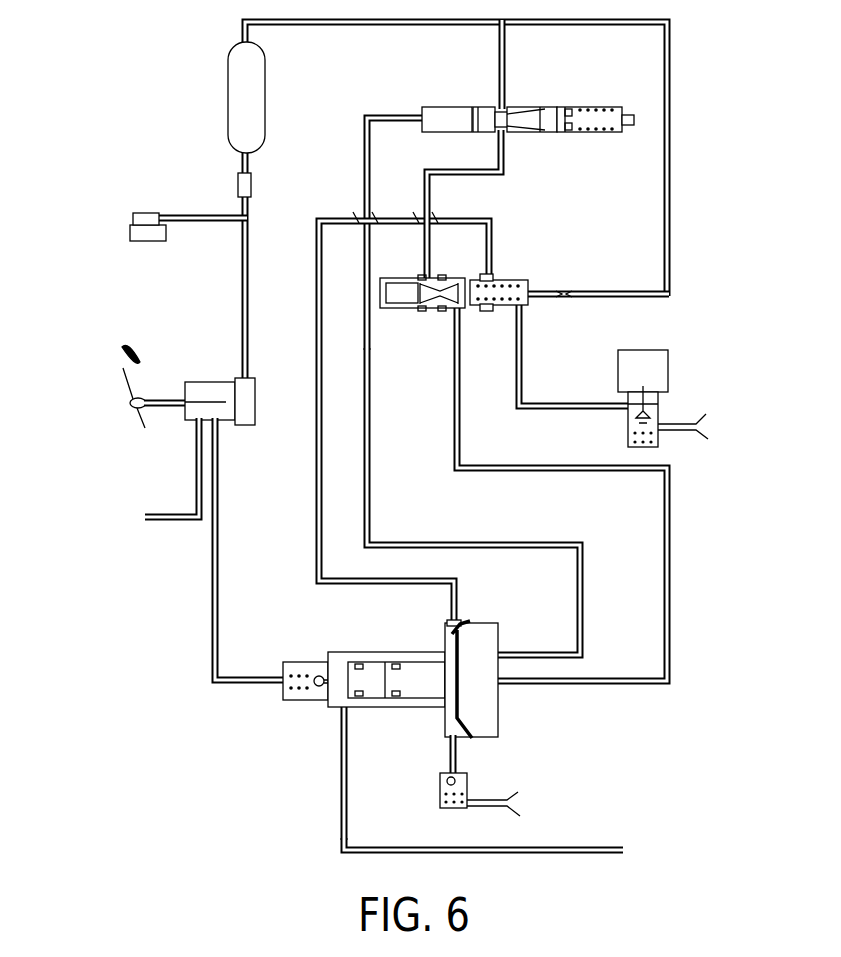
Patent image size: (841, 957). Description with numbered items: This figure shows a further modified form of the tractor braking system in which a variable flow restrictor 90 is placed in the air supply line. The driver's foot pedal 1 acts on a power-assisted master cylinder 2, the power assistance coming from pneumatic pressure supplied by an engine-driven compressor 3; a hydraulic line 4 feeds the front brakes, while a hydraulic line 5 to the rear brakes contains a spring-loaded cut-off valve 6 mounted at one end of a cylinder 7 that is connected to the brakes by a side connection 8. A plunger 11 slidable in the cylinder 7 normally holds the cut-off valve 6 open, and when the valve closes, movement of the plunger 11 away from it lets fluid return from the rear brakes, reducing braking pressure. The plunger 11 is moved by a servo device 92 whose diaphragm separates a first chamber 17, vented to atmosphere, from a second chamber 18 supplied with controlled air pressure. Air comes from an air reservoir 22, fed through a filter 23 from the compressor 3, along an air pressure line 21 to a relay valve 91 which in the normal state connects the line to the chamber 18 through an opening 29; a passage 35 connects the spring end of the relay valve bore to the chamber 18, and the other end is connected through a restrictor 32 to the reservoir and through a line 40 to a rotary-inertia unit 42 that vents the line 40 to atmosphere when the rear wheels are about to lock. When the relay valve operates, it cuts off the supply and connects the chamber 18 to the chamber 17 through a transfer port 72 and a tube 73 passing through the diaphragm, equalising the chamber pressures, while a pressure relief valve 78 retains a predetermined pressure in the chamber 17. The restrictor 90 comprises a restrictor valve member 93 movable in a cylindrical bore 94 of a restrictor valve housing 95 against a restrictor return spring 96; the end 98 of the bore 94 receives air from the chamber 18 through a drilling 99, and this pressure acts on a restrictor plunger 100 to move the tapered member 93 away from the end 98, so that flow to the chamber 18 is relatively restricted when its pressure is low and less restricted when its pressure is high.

The foot pedal 1 is at (137, 390).
The master cylinder 2 is at (256, 398).
The compressor 3 is at (164, 235).
The hydraulic line 4 is at (169, 516).
The hydraulic line 5 is at (219, 497).
The cut-off valve 6 is at (318, 678).
The cylinder 7 is at (377, 707).
The side connection 8 is at (529, 848).
The plunger 11 is at (372, 674).
The first chamber 17 is at (452, 630).
The second chamber 18 is at (498, 631).
The air pressure line 21 is at (501, 44).
The air reservoir 22 is at (266, 62).
The filter 23 is at (252, 186).
The opening 29 is at (458, 436).
The restrictor 32 is at (554, 298).
The passage 35 is at (369, 441).
The line 40 is at (520, 379).
The rotary-inertia unit 42 is at (641, 371).
The transfer port 72 is at (493, 276).
The tube 73 is at (318, 324).
The pressure relief valve 78 is at (440, 796).
The variable flow restrictor 90 is at (486, 134).
The relay valve 91 is at (519, 279).
The servo device 92 is at (462, 630).
The restrictor valve member 93 is at (538, 122).
The cylindrical bore 94 is at (522, 134).
The restrictor valve housing 95 is at (572, 132).
The restrictor return spring 96 is at (607, 110).
The end of the bore 98 is at (451, 118).
The drilling 99 is at (365, 161).
The restrictor plunger 100 is at (491, 118).